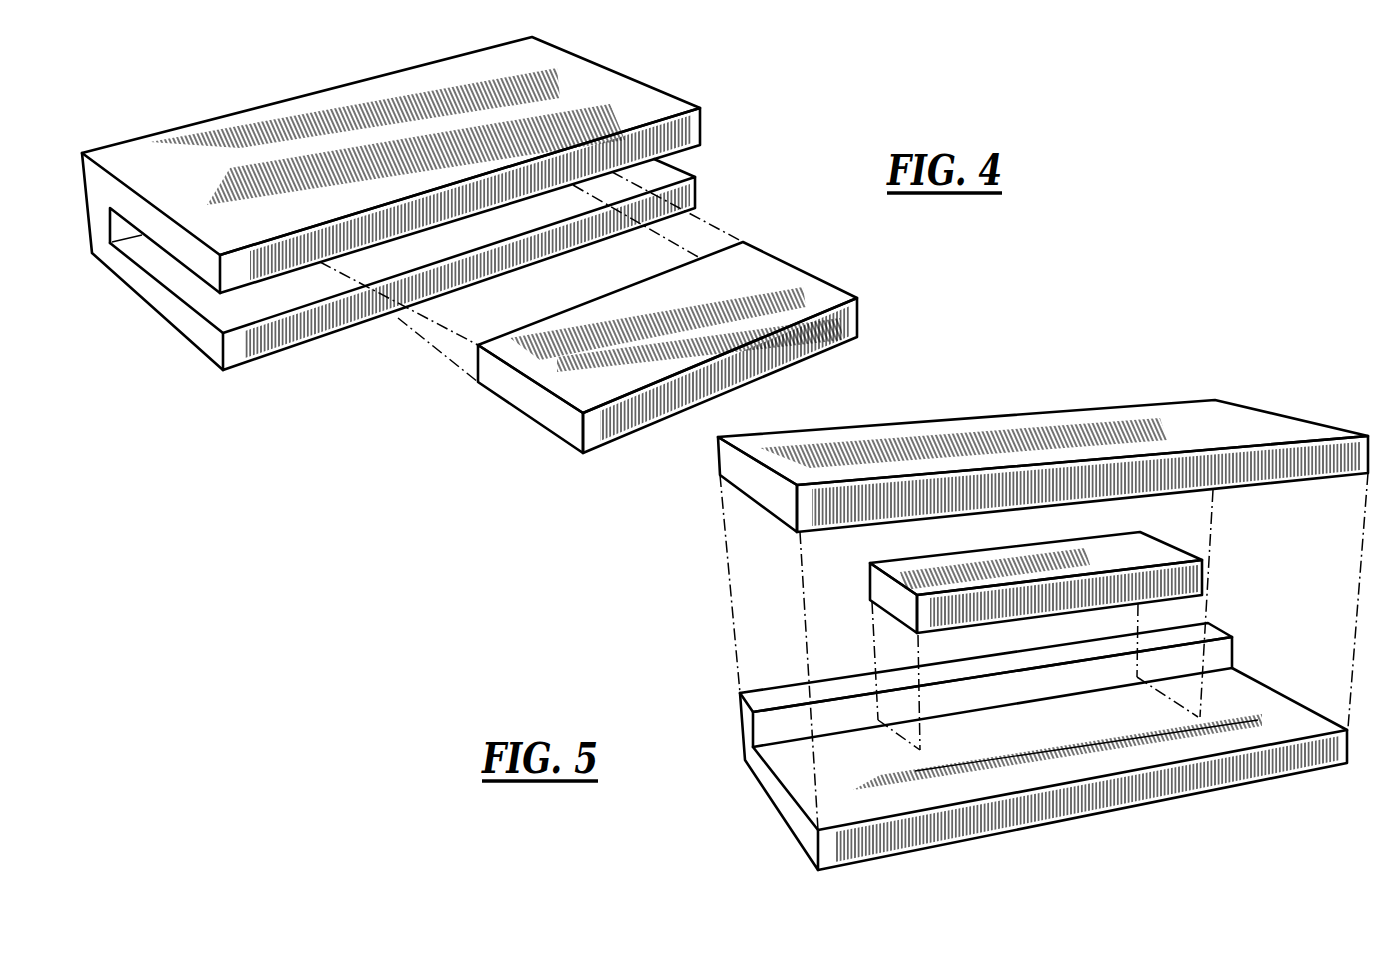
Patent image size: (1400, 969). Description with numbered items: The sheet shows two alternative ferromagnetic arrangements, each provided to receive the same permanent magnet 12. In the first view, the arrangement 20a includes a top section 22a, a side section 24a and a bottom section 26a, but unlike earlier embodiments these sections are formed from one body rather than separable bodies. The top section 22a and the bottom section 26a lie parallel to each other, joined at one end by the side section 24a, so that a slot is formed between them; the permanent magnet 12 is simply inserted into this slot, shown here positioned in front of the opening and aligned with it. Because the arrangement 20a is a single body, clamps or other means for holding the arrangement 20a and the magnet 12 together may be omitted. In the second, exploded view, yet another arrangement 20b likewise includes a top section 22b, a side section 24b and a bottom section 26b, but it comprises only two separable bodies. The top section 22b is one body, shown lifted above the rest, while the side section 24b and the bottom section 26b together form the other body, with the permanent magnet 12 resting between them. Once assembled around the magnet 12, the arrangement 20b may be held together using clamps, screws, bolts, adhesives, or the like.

In FIG. 4, the permanent magnet 12 is at (537, 403).
In FIG. 5, the permanent magnet 12 is at (1173, 582).
In FIG. 4, the ferromagnetic arrangement 20a is at (444, 219).
In FIG. 4, the top section 22a is at (237, 118).
In FIG. 4, the side section 24a is at (100, 220).
In FIG. 4, the bottom section 26a is at (333, 328).
In FIG. 5, the ferromagnetic arrangement 20b is at (979, 596).
In FIG. 5, the top section 22b is at (967, 430).
In FIG. 5, the side section 24b is at (765, 695).
In FIG. 5, the bottom section 26b is at (773, 783).